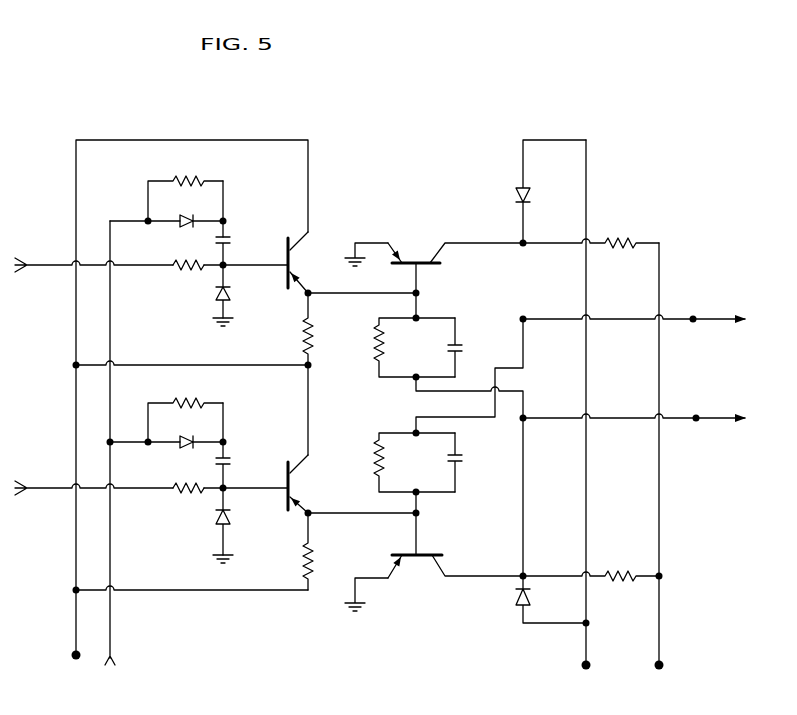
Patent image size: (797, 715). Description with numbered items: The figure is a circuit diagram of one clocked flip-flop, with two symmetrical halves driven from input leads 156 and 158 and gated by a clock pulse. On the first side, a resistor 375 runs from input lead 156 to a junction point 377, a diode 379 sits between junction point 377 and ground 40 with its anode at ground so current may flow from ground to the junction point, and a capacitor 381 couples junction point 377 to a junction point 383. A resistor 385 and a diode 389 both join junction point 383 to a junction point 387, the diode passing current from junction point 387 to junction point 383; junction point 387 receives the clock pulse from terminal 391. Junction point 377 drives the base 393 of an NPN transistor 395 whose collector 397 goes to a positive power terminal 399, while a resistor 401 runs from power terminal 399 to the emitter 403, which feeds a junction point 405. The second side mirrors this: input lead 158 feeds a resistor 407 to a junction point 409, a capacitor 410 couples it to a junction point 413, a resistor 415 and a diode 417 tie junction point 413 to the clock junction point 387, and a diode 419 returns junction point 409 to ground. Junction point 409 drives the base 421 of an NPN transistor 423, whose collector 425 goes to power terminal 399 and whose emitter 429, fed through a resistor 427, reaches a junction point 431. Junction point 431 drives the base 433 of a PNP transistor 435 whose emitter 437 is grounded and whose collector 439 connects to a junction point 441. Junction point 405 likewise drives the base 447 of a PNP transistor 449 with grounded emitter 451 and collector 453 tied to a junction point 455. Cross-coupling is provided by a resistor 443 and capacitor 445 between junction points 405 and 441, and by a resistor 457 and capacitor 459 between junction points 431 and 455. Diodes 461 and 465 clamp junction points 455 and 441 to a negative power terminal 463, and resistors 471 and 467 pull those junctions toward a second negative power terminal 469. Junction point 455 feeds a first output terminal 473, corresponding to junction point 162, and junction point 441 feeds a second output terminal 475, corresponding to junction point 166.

The ground 40 is at (231, 318).
The input lead 156 is at (26, 265).
The input lead 158 is at (27, 487).
The junction point 162 is at (713, 319).
The junction point 166 is at (720, 418).
The resistor 375 is at (180, 270).
The junction point 377 is at (228, 264).
The diode 379 is at (214, 293).
The capacitor 381 is at (232, 240).
The junction point 383 is at (227, 222).
The resistor 385 is at (190, 177).
The junction point 387 is at (146, 218).
The diode 389 is at (183, 213).
The terminal 391 is at (113, 650).
The base 393 is at (284, 268).
The NPN transistor 395 is at (327, 272).
The collector 397 is at (300, 244).
The power terminal 399 is at (72, 648).
The resistor 401 is at (314, 333).
The emitter 403 is at (302, 282).
The junction point 405 is at (420, 293).
The resistor 407 is at (192, 484).
The junction point 409 is at (220, 492).
The capacitor 410 is at (232, 461).
The junction point 413 is at (226, 441).
The resistor 415 is at (188, 400).
The diode 417 is at (184, 436).
The diode 419 is at (232, 519).
The base 421 is at (285, 470).
The NPN transistor 423 is at (325, 495).
The collector 425 is at (304, 460).
The resistor 427 is at (313, 550).
The emitter 429 is at (306, 506).
The junction point 431 is at (420, 513).
The base 433 is at (436, 553).
The PNP transistor 435 is at (423, 591).
The emitter 437 is at (393, 563).
The collector 439 is at (440, 563).
The junction point 441 is at (525, 421).
The resistor 443 is at (374, 344).
The capacitor 445 is at (463, 348).
The base 447 is at (402, 267).
The PNP transistor 449 is at (427, 244).
The emitter 451 is at (392, 250).
The collector 453 is at (441, 251).
The junction point 455 is at (525, 318).
The resistor 457 is at (377, 445).
The capacitor 459 is at (463, 458).
The diode 461 is at (532, 193).
The negative power terminal 463 is at (589, 655).
The diode 465 is at (514, 596).
The resistor 467 is at (612, 572).
The second negative power terminal 469 is at (661, 655).
The resistor 471 is at (622, 249).
The first output terminal 473 is at (696, 321).
The second output terminal 475 is at (697, 420).